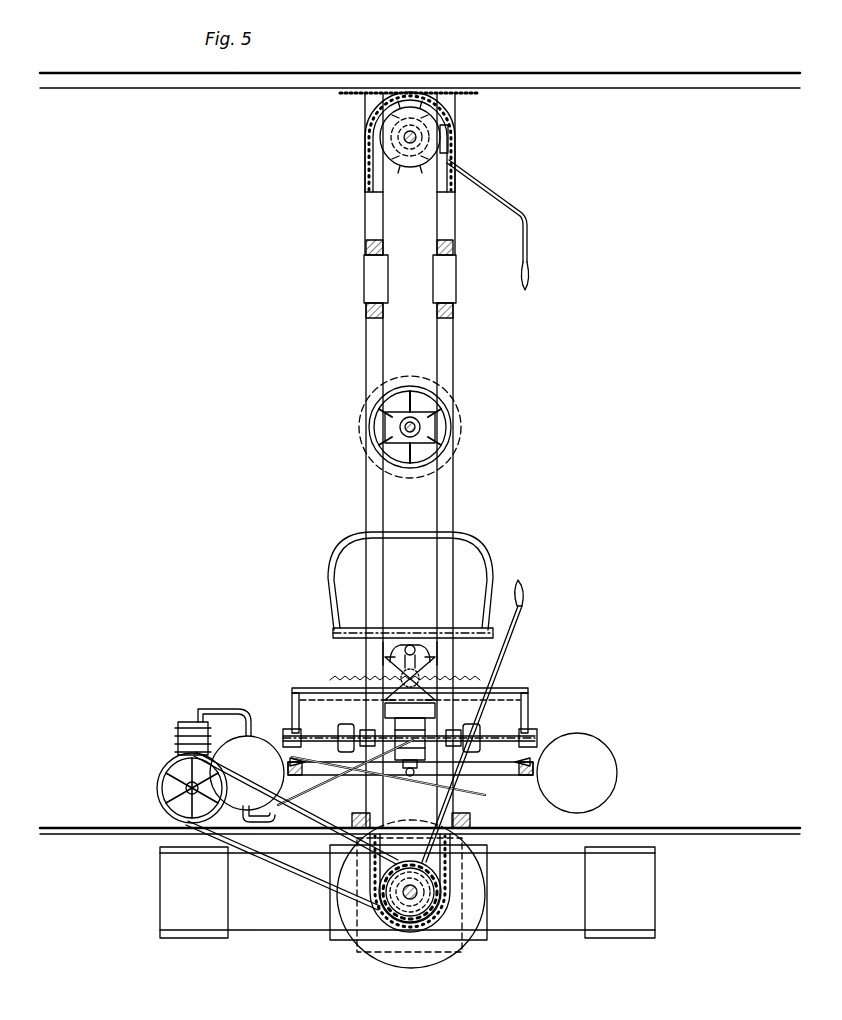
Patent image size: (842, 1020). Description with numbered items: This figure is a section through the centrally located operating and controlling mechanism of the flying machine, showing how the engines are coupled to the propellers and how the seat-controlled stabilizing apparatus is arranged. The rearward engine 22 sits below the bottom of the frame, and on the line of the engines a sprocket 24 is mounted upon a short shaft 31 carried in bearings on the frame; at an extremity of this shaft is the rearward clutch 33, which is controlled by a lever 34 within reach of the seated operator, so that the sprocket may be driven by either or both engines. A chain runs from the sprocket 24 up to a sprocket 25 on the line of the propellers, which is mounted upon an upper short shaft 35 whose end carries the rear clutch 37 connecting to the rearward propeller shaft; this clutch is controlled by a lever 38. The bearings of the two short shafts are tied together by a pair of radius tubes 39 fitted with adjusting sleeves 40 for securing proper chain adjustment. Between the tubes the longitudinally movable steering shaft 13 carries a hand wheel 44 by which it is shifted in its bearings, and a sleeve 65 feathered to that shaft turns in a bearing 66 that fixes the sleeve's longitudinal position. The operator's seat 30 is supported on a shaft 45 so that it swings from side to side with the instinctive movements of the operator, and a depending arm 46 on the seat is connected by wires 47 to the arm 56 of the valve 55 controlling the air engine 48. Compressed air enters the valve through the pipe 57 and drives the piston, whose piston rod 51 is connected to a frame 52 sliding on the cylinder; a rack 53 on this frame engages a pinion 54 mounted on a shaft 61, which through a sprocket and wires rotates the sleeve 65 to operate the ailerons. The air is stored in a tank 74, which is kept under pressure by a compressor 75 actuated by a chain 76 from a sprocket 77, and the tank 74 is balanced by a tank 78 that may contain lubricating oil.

The shaft 13 is at (405, 432).
The rearward engine 22 is at (407, 895).
The sprocket 24 is at (435, 912).
The sprocket 25 is at (417, 160).
The operator's seat 30 is at (491, 562).
The short shaft 31 is at (405, 896).
The rearward clutch 33 is at (424, 915).
The lever 34 is at (489, 721).
The short shaft 35 is at (400, 148).
The rear clutch 37 is at (446, 141).
The lever 38 is at (501, 225).
The radius tube 39 is at (378, 348).
The adjusting sleeve 40 is at (366, 282).
The hand wheel 44 is at (455, 426).
The shaft 45 is at (418, 650).
The depending arm 46 is at (378, 720).
The wire 47 is at (292, 732).
The air engine 48 is at (455, 735).
The piston rod 51 is at (350, 737).
The frame 52 is at (352, 693).
The rack 53 is at (388, 680).
The pinion 54 is at (420, 686).
The valve 55 is at (410, 762).
The arm 56 is at (460, 780).
The pipe 57 is at (325, 777).
The shaft 61 is at (410, 672).
The sleeve 65 is at (400, 427).
The bearing 66 is at (392, 412).
The tank 74 is at (296, 808).
The compressor 75 is at (185, 788).
The chain 76 is at (296, 872).
The sprocket 77 is at (412, 905).
The tank 78 is at (577, 773).